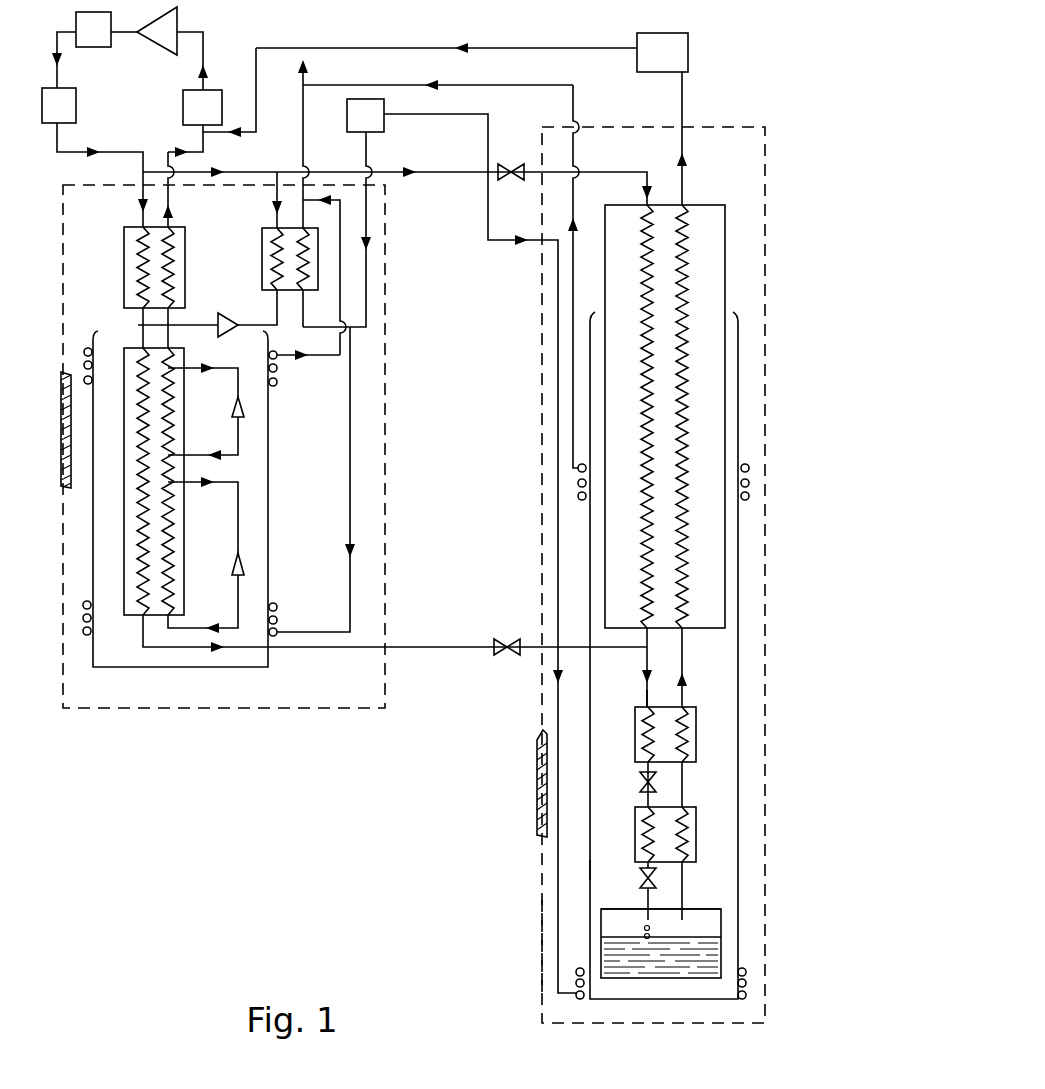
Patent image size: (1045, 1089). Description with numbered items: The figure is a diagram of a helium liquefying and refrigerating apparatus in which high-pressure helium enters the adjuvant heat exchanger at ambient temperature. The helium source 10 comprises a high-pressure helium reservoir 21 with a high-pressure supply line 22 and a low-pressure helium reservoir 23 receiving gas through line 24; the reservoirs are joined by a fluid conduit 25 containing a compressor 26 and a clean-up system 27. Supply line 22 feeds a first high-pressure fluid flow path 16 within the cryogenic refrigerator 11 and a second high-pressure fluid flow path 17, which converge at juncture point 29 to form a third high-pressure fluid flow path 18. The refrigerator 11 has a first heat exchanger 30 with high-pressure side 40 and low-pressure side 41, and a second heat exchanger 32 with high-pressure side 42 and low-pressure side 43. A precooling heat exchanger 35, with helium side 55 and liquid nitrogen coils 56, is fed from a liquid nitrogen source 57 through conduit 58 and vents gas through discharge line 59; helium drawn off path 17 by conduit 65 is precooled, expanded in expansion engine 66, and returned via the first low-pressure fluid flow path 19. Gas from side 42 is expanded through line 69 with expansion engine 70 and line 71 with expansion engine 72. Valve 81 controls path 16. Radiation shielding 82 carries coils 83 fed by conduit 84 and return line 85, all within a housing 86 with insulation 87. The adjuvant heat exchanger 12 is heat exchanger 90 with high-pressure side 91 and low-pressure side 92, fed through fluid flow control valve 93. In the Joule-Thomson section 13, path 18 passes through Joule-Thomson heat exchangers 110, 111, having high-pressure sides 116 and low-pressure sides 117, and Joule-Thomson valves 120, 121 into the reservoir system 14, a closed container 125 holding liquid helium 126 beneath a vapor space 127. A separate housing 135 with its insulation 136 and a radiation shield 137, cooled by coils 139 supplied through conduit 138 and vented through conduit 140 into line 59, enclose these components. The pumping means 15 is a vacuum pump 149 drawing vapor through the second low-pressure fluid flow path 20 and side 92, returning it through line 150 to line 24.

The helium source 10 is at (214, 45).
The cryogenic refrigerator 11 is at (364, 440).
The adjuvant heat exchanger 12 is at (770, 290).
The Joule-Thomson expansion and liquefaction section 13 is at (770, 843).
The liquid helium reservoir system 14 is at (533, 936).
The pumping means 15 is at (706, 48).
The first high-pressure fluid flow path 16 is at (138, 325).
The second high-pressure fluid flow path 17 is at (442, 175).
The third high-pressure fluid flow path 18 is at (647, 692).
The first low-pressure fluid flow path 19 is at (170, 195).
The second low-pressure fluid flow path 20 is at (684, 100).
The high-pressure helium reservoir 21 is at (59, 77).
The high-pressure supply line 22 is at (55, 137).
The low-pressure helium reservoir 23 is at (202, 107).
The line 24 is at (207, 143).
The fluid conduit 25 is at (200, 56).
The compressor 26 is at (144, 31).
The clean-up system 27 is at (93, 29).
The juncture point 29 is at (645, 659).
The first heat exchanger 30 is at (130, 252).
The second heat exchanger 32 is at (185, 436).
The precooling heat exchanger 35 is at (270, 248).
The high-pressure side 40 is at (137, 259).
The low-pressure side 41 is at (172, 290).
The high-pressure side 42 is at (140, 432).
The low-pressure side 43 is at (173, 541).
The high-pressure helium side 55 is at (272, 262).
The liquid nitrogen coils 56 is at (306, 282).
The liquid nitrogen source 57 is at (365, 115).
The conduit 58 is at (362, 158).
The discharge line 59 is at (300, 113).
The conduit 65 is at (276, 196).
The expansion engine 66 is at (232, 334).
The line 69 is at (203, 382).
The expansion engine 70 is at (241, 414).
The line 71 is at (237, 522).
The expansion engine 72 is at (234, 577).
The valve 81 is at (498, 654).
The radiation shielding 82 is at (270, 512).
The coils 83 is at (278, 620).
The conduit 84 is at (349, 404).
The return line 85 is at (321, 361).
The housing 86 is at (59, 383).
The insulation 87 is at (62, 456).
The heat exchanger 90 is at (727, 237).
The high-pressure side 91 is at (646, 270).
The low-pressure side 92 is at (688, 295).
The fluid flow control valve 93 is at (516, 165).
The Joule-Thomson heat exchanger 110 is at (694, 725).
The Joule-Thomson heat exchanger 111 is at (695, 835).
The high-pressure sides 116 is at (644, 745).
The low-pressure sides 117 is at (694, 748).
The Joule-Thomson valve 120 is at (643, 785).
The Joule-Thomson valve 121 is at (644, 883).
The closed container 125 is at (712, 968).
The liquid helium 126 is at (712, 945).
The vapor space 127 is at (712, 920).
The housing 135 is at (540, 806).
The plate 136 is at (543, 836).
The radiation shield 137 is at (588, 871).
The conduit 138 is at (465, 117).
The coils 139 is at (576, 984).
The conduit 140 is at (498, 85).
The vacuum pump 149 is at (662, 52).
The line 150 is at (400, 45).